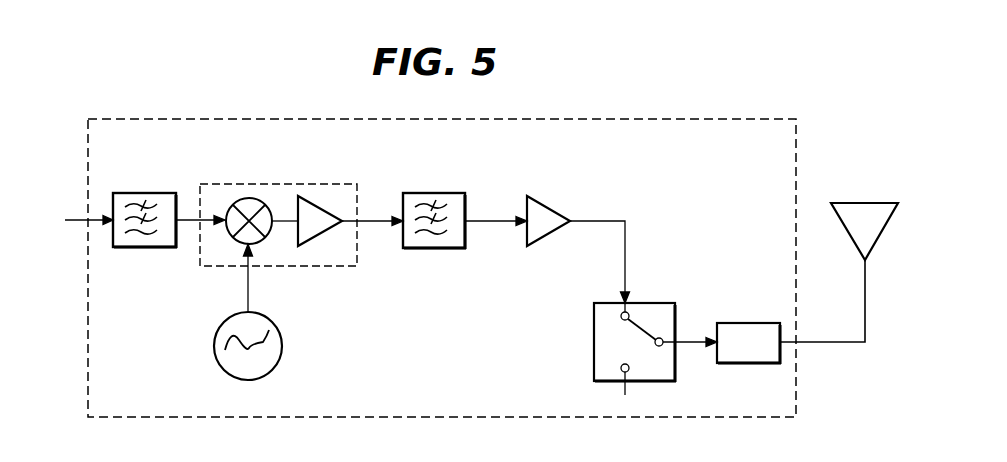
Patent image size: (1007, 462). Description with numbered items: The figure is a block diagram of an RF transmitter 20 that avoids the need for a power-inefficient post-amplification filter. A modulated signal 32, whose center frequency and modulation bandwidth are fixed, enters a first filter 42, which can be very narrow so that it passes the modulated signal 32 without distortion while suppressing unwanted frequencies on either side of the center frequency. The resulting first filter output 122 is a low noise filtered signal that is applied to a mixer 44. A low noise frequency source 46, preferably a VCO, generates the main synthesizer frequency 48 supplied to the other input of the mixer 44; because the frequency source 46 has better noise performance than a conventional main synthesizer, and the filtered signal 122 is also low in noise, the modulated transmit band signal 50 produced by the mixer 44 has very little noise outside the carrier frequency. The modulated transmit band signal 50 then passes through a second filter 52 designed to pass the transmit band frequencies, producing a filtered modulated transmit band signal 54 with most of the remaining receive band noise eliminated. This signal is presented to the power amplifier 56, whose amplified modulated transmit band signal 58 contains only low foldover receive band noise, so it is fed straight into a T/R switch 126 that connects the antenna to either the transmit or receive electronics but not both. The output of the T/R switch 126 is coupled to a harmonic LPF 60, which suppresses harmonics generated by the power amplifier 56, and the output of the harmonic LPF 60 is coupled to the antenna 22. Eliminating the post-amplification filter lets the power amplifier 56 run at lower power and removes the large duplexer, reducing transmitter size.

The transmitter 20 is at (147, 409).
The modulated signal 32 is at (54, 230).
The first filter 42 is at (137, 193).
The first filter output 122 is at (190, 218).
The mixer 44 is at (255, 184).
The modulated transmit band signal 50 is at (375, 218).
The second filter 52 is at (448, 193).
The filtered modulated transmit band signal 54 is at (493, 218).
The power amplifier 56 is at (547, 207).
The amplified modulated transmit band signal 58 is at (627, 253).
The T/R switch 126 is at (594, 340).
The harmonic LPF 60 is at (745, 323).
The antenna 22 is at (850, 243).
The frequency source 46 is at (282, 350).
The main synthesizer frequency 48 is at (248, 283).